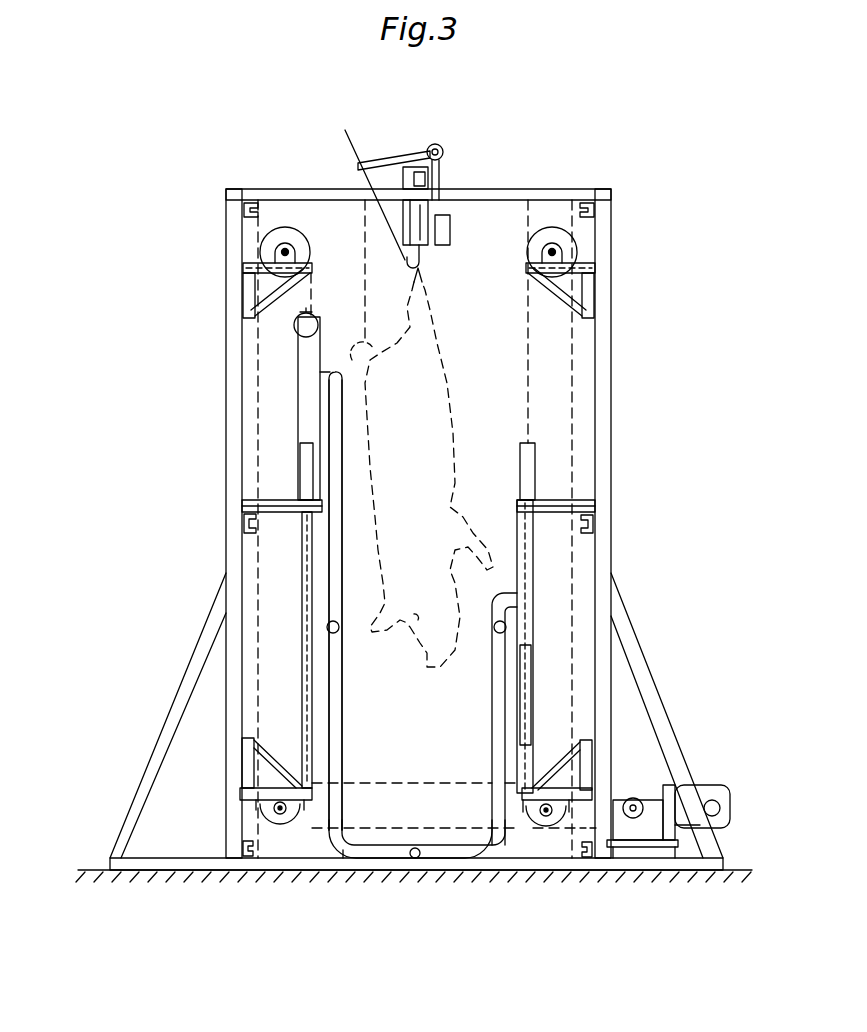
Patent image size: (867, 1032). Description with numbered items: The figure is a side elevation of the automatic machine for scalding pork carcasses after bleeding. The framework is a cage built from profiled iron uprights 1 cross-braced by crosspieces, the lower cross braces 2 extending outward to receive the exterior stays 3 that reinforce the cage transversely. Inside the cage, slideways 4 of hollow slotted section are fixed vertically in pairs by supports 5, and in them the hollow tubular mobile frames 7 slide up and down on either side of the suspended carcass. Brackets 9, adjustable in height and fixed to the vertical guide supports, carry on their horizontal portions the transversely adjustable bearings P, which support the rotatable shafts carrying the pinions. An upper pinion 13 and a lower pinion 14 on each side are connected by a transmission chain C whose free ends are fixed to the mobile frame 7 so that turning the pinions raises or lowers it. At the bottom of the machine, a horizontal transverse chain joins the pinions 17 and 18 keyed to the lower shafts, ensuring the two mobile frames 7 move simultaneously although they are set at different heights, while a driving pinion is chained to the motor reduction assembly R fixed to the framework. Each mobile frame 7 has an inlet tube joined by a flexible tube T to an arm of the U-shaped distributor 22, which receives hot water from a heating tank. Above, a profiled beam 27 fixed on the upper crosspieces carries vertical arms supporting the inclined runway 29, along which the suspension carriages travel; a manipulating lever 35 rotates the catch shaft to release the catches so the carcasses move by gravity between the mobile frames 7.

The profiled iron uprights 1 is at (232, 402).
The lower cross braces 2 is at (245, 866).
The exterior stays 3 is at (215, 612).
The slideways 4 is at (302, 465).
The supports 5 is at (272, 497).
The mobile frames 7 is at (303, 393).
The brackets 9 is at (253, 288).
The pinion 13 is at (277, 232).
The pinion 14 is at (285, 835).
The pinion 17 is at (533, 818).
The pinion 18 is at (257, 805).
The distributor 22 is at (445, 855).
The profiled beam 27 is at (421, 165).
The inclined runway 29 is at (440, 197).
The manipulating lever 35 is at (390, 158).
The transmission chain C is at (258, 430).
The bearings P is at (268, 258).
The motor reduction assembly R is at (707, 815).
The flexible tube T is at (333, 572).